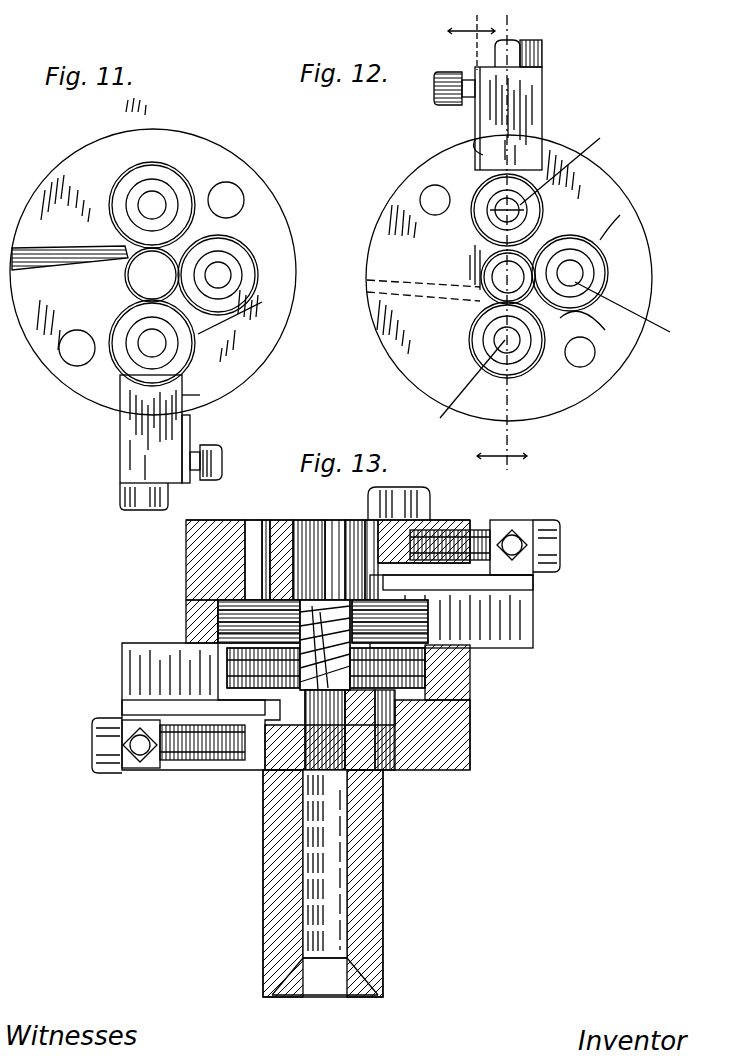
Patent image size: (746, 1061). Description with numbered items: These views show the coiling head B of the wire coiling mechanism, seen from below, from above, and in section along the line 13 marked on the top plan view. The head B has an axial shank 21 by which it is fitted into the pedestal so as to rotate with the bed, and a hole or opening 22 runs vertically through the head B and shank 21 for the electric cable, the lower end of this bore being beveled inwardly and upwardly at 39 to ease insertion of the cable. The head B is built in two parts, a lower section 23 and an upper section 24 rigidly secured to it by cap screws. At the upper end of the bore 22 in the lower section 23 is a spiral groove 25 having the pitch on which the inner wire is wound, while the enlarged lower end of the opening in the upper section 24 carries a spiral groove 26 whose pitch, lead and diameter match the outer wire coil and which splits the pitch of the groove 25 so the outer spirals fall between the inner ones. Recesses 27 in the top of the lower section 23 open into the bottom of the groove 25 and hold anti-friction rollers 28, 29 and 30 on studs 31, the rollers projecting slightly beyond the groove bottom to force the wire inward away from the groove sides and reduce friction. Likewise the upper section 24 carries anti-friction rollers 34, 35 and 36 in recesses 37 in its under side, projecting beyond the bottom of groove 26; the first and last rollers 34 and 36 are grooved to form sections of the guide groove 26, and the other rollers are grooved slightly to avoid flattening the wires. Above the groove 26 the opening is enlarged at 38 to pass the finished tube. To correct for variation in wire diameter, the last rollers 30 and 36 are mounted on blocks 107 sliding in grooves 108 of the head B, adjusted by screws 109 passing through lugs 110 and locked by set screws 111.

In FIG. 13, the line of section 13 is at (511, 527).
In FIG. 13, the axial shank 21 is at (385, 870).
In FIG. 13, the hole or opening 22 is at (330, 893).
In FIG. 12, the lower section 23 is at (394, 230).
In FIG. 13, the lower section 23 is at (475, 720).
In FIG. 11, the upper section 24 is at (226, 170).
In FIG. 13, the upper section 24 is at (222, 530).
In FIG. 12, the spiral groove 25 is at (488, 279).
In FIG. 13, the spiral groove 25 is at (455, 772).
In FIG. 11, the spiral groove 26 is at (128, 277).
In FIG. 13, the spiral groove 26 is at (338, 600).
In FIG. 12, the recesses 27 is at (597, 279).
In FIG. 13, the recesses 27 is at (470, 686).
In FIG. 12, the anti-friction roller 28 is at (527, 368).
In FIG. 13, the anti-friction roller 28 is at (430, 657).
In FIG. 12, the anti-friction roller 29 is at (595, 280).
In FIG. 13, the anti-friction roller 29 is at (312, 600).
In FIG. 12, the anti-friction roller 30 is at (545, 210).
In FIG. 13, the anti-friction roller 30 is at (235, 660).
In FIG. 12, the studs 31 is at (563, 279).
In FIG. 13, the studs 31 is at (440, 700).
In FIG. 11, the anti-friction roller 34 is at (112, 205).
In FIG. 13, the anti-friction roller 34 is at (222, 615).
In FIG. 11, the anti-friction roller 35 is at (240, 258).
In FIG. 11, the anti-friction roller 36 is at (190, 347).
In FIG. 13, the anti-friction roller 36 is at (430, 610).
In FIG. 11, the recesses 37 is at (241, 309).
In FIG. 13, the enlarged opening 38 is at (305, 528).
In FIG. 13, the bevel 39 is at (293, 998).
In FIG. 11, the blocks 107 is at (132, 443).
In FIG. 12, the blocks 107 is at (545, 95).
In FIG. 13, the blocks 107 is at (124, 688).
In FIG. 11, the grooves 108 is at (178, 395).
In FIG. 12, the grooves 108 is at (475, 150).
In FIG. 11, the adjusting screws 109 is at (132, 505).
In FIG. 13, the adjusting screws 109 is at (560, 545).
In FIG. 13, the lugs 110 is at (525, 525).
In FIG. 13, the set screws 111 is at (503, 530).
In FIG. 13, the coiling head B is at (399, 503).